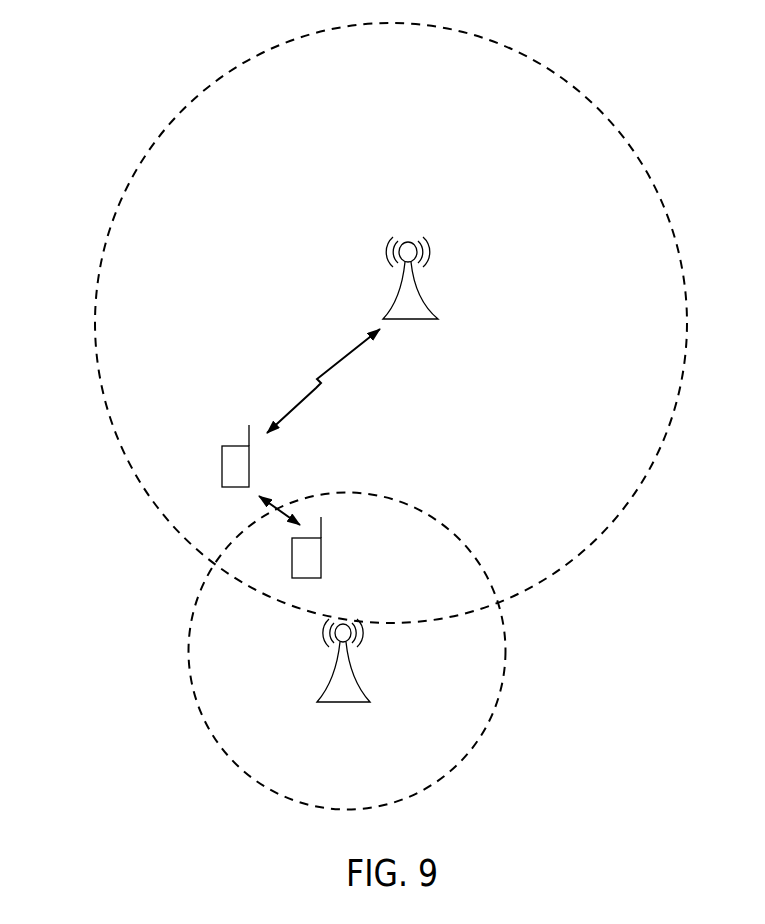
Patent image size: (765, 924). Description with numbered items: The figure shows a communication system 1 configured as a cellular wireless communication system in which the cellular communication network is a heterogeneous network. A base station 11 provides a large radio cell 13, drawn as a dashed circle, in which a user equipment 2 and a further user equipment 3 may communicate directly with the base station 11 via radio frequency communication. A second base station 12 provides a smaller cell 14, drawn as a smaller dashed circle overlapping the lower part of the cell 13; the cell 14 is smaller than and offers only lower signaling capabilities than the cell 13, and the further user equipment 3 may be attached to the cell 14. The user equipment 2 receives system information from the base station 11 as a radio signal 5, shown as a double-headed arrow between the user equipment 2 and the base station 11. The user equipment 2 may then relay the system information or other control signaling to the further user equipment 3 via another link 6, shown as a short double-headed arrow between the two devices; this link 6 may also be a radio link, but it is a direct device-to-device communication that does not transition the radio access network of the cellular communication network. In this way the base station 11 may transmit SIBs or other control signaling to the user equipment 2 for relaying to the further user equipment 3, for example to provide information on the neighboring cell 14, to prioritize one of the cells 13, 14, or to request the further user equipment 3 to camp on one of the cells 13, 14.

The communication system 1 is at (74, 38).
The user equipment 2 is at (222, 487).
The further user equipment 3 is at (292, 578).
The radio signal 5 is at (327, 369).
The link 6 is at (279, 511).
The base station 11 is at (438, 319).
The base station 12 is at (370, 702).
The cell 13 is at (603, 112).
The cell 14 is at (240, 765).